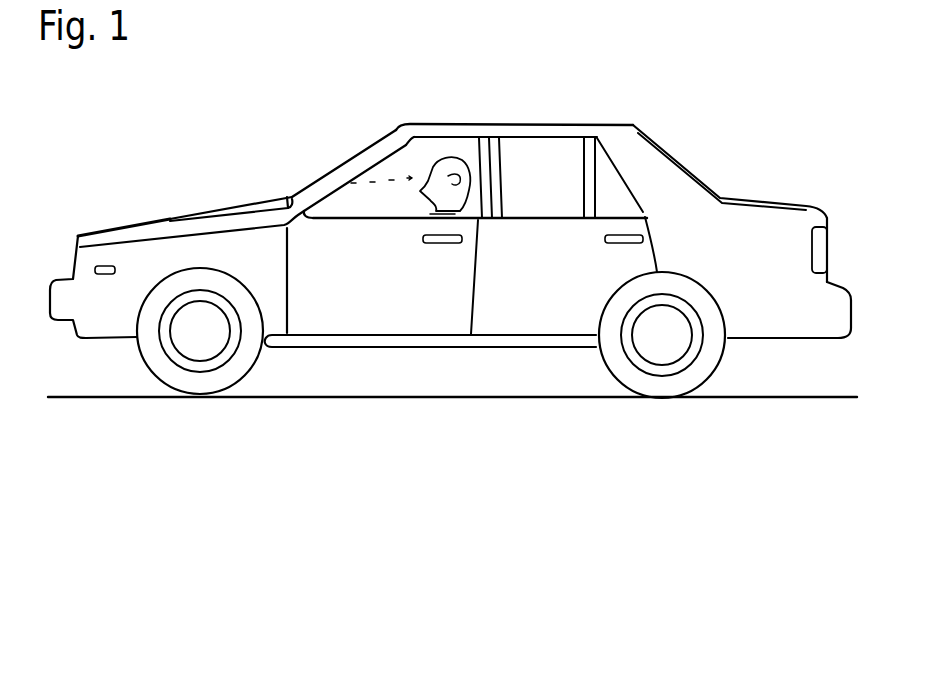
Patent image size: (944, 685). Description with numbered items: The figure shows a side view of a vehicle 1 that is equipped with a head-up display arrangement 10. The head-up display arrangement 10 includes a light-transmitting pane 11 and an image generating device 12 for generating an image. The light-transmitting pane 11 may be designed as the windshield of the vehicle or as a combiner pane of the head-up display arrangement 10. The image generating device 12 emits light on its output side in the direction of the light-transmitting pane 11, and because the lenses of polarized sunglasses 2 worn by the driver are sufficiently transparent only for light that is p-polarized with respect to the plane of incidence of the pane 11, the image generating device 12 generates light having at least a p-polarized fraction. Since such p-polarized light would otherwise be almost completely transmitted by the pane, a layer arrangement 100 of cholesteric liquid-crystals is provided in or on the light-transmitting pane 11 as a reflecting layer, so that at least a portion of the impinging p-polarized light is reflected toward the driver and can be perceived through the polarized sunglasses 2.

The vehicle 1 is at (293, 125).
The polarized sunglasses 2 is at (423, 176).
The head-up display arrangement 10 is at (327, 212).
The light-transmitting pane 11 is at (333, 163).
The image generating device 12 is at (303, 215).
The layer arrangement of cholesteric liquid-crystals 100 is at (293, 188).